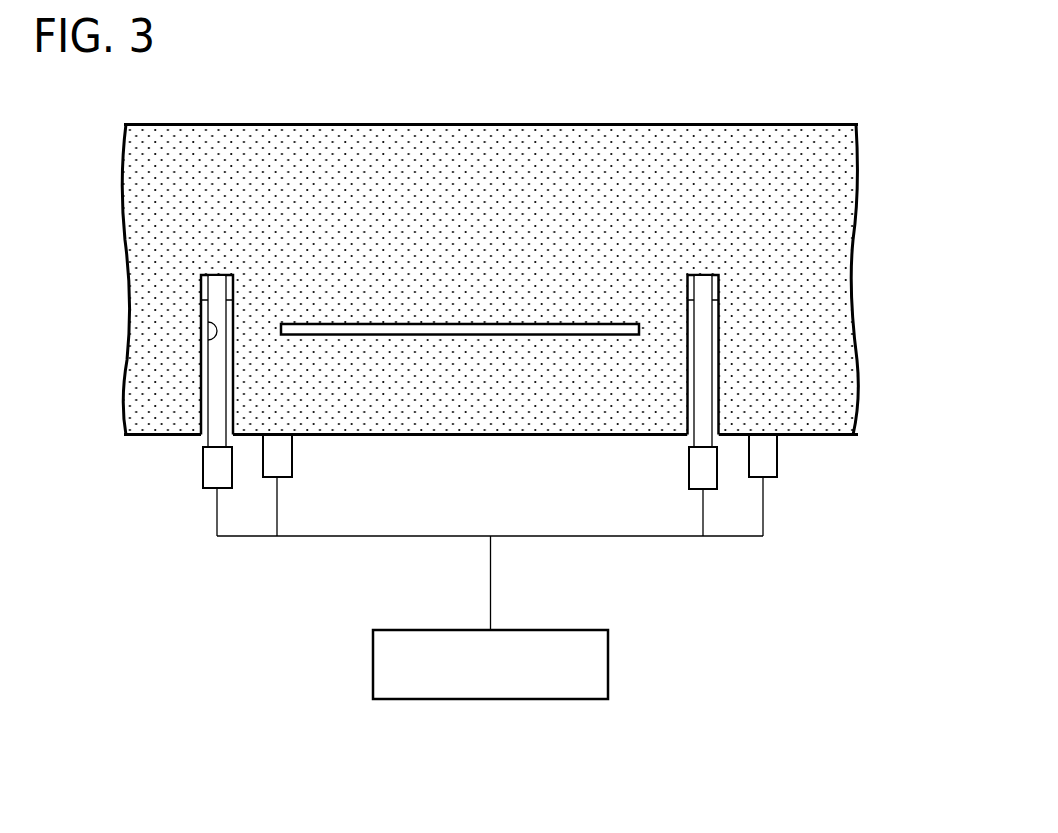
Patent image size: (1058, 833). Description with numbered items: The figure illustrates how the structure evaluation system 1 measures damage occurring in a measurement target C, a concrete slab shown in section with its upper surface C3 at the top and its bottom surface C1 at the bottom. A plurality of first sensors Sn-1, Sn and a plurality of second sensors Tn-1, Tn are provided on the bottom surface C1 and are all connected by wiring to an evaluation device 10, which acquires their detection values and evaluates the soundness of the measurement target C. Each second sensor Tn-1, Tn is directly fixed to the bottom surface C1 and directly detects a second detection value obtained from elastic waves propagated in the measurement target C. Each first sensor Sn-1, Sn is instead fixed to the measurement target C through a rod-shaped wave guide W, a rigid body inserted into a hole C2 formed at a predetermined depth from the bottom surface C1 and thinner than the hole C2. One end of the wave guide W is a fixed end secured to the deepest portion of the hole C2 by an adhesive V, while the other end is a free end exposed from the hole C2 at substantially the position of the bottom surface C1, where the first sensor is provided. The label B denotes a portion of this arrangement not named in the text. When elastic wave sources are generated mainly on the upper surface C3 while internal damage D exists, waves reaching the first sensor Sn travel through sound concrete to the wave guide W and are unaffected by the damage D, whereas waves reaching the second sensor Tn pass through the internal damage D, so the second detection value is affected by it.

The structure evaluation system 1 is at (697, 773).
The evaluation device 10 is at (608, 664).
The measurement target C is at (835, 193).
The bottom surface C1 is at (513, 435).
The hole C2 is at (208, 322).
The upper surface C3 is at (478, 124).
The damage D is at (460, 335).
The adhesive V is at (200, 286).
The barrier layer B is at (215, 393).
The wave guide W is at (215, 418).
The first sensor Sn-1 is at (216, 467).
The first sensor Sn is at (703, 467).
The second sensor Tn-1 is at (277, 455).
The second sensor Tn is at (763, 457).